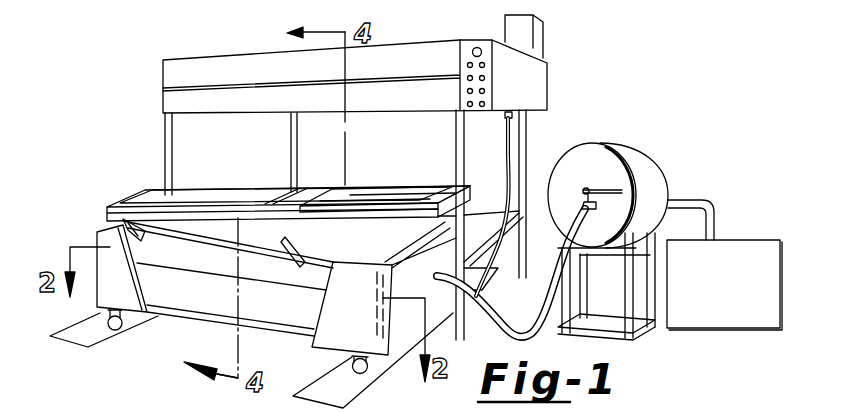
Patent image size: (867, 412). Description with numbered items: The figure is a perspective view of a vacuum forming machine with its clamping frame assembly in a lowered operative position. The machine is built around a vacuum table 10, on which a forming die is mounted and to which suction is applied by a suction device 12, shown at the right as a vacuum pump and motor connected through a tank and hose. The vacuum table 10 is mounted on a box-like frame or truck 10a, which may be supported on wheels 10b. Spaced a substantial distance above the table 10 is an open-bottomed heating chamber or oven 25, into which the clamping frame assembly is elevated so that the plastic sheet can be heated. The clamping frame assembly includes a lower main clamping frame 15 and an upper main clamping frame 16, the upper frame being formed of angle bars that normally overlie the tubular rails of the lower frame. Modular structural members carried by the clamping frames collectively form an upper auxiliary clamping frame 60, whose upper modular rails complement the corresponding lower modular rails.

The vacuum table 10 is at (100, 227).
The box-like frame or truck 10a is at (95, 293).
The wheels 10b is at (118, 330).
The suction device 12 is at (752, 240).
The lower main clamping frame 15 is at (98, 214).
The upper main clamping frame 16 is at (126, 188).
The heating chamber or oven 25 is at (158, 74).
The upper auxiliary clamping frame 60 is at (347, 196).